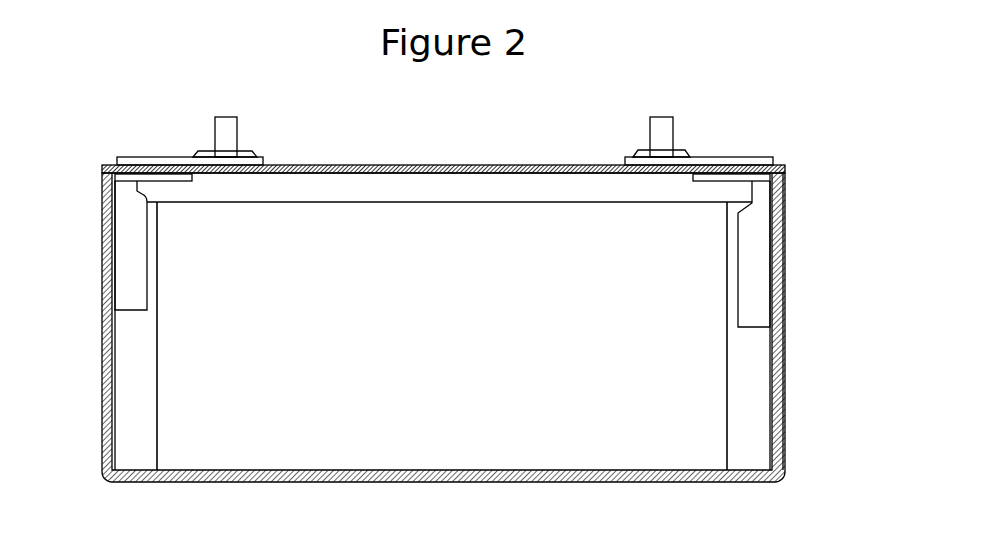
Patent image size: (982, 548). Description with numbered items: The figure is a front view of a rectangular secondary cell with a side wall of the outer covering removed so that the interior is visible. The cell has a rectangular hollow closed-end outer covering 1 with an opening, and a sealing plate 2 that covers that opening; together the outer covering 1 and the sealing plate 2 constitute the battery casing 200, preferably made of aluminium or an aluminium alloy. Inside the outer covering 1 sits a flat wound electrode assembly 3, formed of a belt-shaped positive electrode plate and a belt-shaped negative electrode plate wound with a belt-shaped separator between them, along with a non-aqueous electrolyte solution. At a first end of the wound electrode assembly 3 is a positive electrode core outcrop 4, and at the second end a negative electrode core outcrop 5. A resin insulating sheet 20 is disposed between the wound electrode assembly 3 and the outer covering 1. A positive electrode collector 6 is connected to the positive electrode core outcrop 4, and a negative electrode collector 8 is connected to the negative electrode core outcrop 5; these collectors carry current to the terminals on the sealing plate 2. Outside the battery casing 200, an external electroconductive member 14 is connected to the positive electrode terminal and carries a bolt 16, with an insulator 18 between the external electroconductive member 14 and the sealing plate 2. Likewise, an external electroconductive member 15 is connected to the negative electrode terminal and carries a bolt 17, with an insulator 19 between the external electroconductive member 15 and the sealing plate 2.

The battery casing 200 is at (818, 82).
The outer covering 1 is at (782, 203).
The sealing plate 2 is at (768, 163).
The insulating sheet 20 is at (783, 343).
The wound electrode assembly 3 is at (503, 420).
The positive electrode core outcrop 4 is at (748, 440).
The negative electrode core outcrop 5 is at (130, 440).
The positive electrode collector 6 is at (757, 250).
The negative electrode collector 8 is at (133, 232).
The external electroconductive member 14 is at (685, 148).
The external electroconductive member 15 is at (208, 150).
The bolt 16 is at (662, 125).
The bolt 17 is at (230, 130).
The insulator 18 is at (747, 160).
The insulator 19 is at (152, 160).